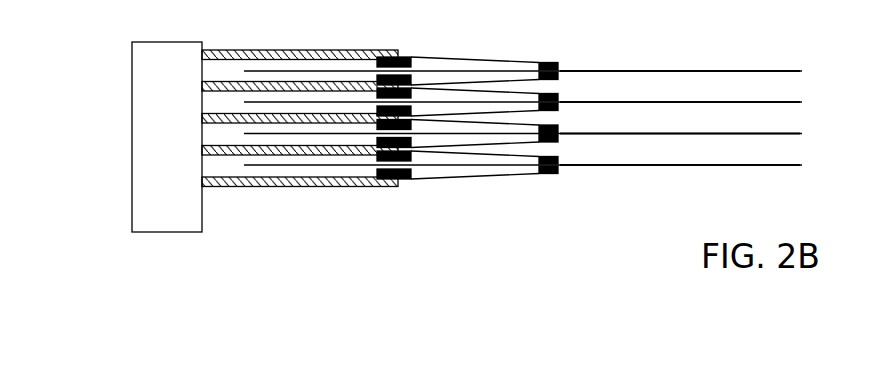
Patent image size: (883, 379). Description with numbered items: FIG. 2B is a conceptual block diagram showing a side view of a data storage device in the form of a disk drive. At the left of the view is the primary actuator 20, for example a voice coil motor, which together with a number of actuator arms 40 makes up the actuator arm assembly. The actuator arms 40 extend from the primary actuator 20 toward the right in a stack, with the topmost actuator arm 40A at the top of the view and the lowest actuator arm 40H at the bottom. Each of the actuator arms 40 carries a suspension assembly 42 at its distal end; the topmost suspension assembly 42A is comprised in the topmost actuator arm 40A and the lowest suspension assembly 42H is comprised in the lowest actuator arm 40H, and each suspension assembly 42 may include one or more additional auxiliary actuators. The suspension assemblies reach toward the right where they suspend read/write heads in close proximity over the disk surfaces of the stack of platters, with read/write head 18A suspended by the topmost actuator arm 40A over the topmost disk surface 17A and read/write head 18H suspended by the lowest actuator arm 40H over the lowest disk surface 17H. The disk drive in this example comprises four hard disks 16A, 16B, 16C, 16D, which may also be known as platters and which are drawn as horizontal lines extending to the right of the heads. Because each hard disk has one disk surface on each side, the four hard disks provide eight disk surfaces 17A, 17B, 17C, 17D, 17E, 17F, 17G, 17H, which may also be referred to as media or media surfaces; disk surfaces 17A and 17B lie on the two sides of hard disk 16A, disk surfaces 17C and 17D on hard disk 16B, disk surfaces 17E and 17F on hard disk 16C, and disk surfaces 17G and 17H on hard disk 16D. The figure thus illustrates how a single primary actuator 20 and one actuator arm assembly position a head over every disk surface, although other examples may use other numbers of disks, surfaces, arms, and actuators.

The primary actuator 20 is at (131, 77).
The actuator arms 40 is at (300, 138).
The topmost actuator arm 40A is at (318, 50).
The lowest actuator arm 40H is at (268, 187).
The suspension assembly 42 is at (474, 140).
The topmost suspension assembly 42A is at (495, 56).
The lowest suspension assembly 42H is at (494, 182).
The read/write head 18A is at (565, 59).
The read/write head 18H is at (565, 178).
The hard disk 16A is at (814, 71).
The hard disk 16B is at (814, 102).
The hard disk 16C is at (814, 134).
The hard disk 16D is at (814, 165).
The disk surface 17A is at (716, 70).
The disk surface 17B is at (698, 73).
The disk surface 17C is at (716, 101).
The disk surface 17D is at (698, 104).
The disk surface 17E is at (701, 132).
The disk surface 17F is at (682, 135).
The disk surface 17G is at (701, 164).
The disk surface 17H is at (682, 167).